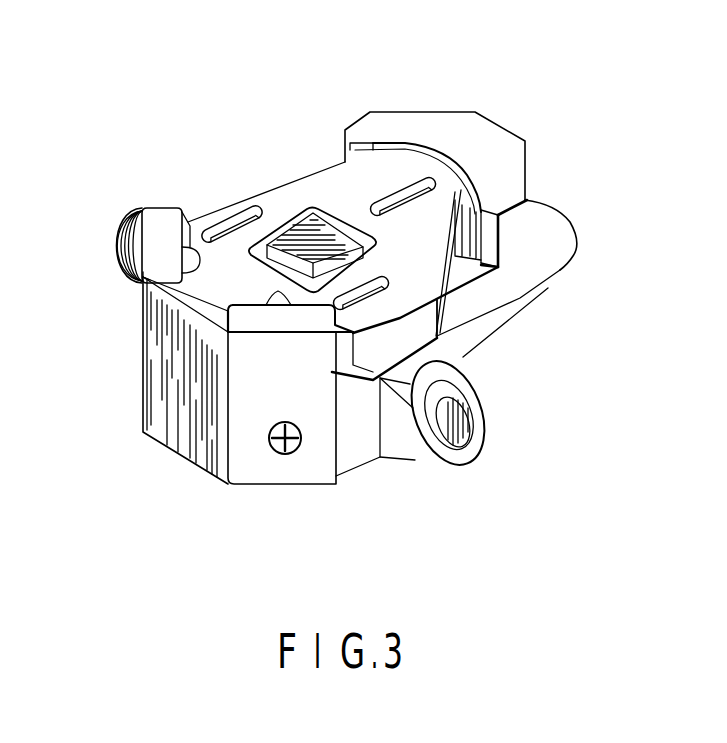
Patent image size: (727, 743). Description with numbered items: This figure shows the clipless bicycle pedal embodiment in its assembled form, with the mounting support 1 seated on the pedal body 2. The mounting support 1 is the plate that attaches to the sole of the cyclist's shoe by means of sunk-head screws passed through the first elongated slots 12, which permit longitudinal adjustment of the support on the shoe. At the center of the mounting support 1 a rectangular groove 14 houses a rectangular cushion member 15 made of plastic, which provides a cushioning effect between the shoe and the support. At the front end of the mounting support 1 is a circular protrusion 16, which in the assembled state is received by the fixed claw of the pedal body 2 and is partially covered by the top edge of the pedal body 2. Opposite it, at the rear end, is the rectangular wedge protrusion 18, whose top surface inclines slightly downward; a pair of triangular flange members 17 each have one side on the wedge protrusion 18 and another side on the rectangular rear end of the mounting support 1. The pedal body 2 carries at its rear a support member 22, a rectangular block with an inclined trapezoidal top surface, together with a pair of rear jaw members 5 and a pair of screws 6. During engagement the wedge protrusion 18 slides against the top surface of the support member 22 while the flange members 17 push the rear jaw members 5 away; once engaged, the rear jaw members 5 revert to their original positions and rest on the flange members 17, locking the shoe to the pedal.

The mounting support 1 is at (313, 190).
The pedal body 2 is at (577, 256).
The rear jaw members 5 is at (160, 255).
The screws 6 is at (293, 453).
The first elongated slots 12 is at (233, 215).
The rectangular groove 14 is at (400, 293).
The cushion member 15 is at (307, 235).
The circular protrusion 16 is at (468, 237).
The triangular flange members 17 is at (353, 380).
The rectangular wedge protrusion 18 is at (227, 280).
The support member 22 is at (177, 387).